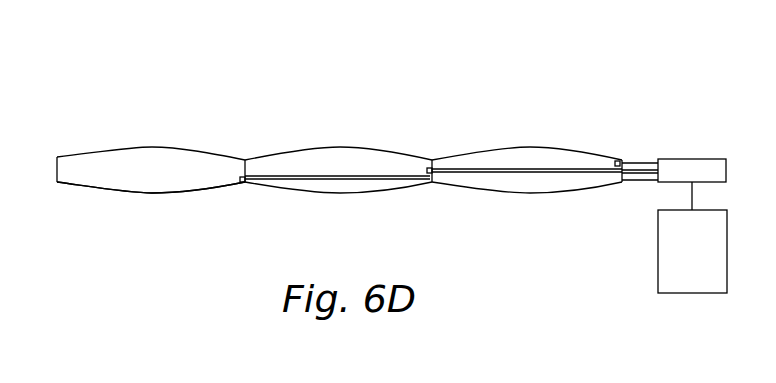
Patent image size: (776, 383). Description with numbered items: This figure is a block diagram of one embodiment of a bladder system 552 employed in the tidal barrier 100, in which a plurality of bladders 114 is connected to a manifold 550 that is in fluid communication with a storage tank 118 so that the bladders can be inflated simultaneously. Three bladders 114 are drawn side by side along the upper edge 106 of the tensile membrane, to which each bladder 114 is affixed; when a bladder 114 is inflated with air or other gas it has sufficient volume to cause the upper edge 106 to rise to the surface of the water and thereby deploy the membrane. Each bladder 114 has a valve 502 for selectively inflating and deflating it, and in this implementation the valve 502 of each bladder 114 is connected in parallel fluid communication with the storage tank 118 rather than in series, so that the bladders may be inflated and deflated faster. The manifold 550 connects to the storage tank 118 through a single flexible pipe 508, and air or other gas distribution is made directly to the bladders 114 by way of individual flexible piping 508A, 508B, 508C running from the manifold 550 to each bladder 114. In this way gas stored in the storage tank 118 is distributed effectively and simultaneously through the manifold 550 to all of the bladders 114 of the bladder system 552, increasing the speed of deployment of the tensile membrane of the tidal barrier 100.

The tidal barrier 100 is at (575, 77).
The bladder system 552 is at (335, 115).
The bladder 114 is at (105, 153).
The upper edge 106 is at (122, 192).
The valve 502 is at (240, 181).
The flexible pipe 508 is at (692, 195).
The individual flexible piping 508A is at (640, 160).
The individual flexible piping 508B is at (527, 174).
The individual flexible piping 508C is at (325, 178).
The manifold 550 is at (673, 158).
The storage tank 118 is at (658, 252).